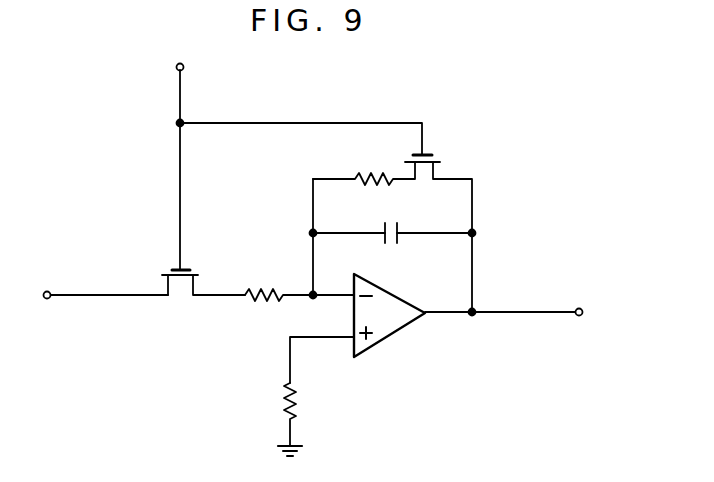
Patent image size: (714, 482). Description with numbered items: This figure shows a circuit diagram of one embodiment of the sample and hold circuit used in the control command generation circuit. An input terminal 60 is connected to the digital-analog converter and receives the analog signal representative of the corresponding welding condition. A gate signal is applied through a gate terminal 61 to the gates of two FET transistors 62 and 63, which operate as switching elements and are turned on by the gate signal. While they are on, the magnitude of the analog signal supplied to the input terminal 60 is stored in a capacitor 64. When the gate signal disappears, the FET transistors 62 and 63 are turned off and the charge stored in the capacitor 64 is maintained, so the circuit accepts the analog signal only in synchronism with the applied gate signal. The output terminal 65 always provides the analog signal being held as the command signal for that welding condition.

The input terminal 60 is at (49, 300).
The gate terminal 61 is at (175, 67).
The FET transistor 62 is at (197, 273).
The FET transistor 63 is at (441, 147).
The capacitor 64 is at (398, 210).
The output terminal 65 is at (584, 309).